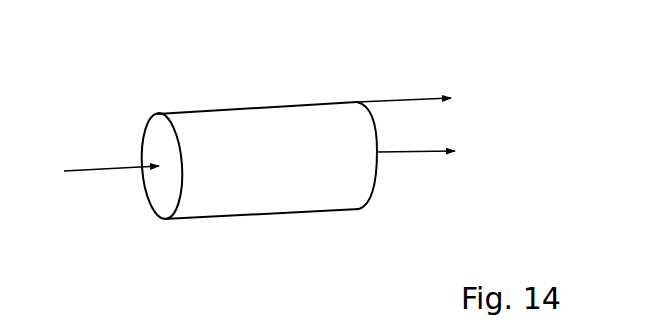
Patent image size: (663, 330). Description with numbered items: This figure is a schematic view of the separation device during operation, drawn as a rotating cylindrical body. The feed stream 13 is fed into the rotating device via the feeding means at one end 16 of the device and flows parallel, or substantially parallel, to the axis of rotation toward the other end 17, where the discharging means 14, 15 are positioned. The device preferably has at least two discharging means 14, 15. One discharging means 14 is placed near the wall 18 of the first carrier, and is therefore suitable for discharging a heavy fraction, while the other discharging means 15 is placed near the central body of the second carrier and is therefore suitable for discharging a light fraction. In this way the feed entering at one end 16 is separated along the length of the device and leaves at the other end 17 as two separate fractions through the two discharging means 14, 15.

The feed stream 13 is at (81, 170).
The discharging means 14 is at (407, 98).
The discharging means 15 is at (417, 153).
The one end 16 is at (158, 103).
The other end 17 is at (355, 96).
The wall 18 is at (277, 106).